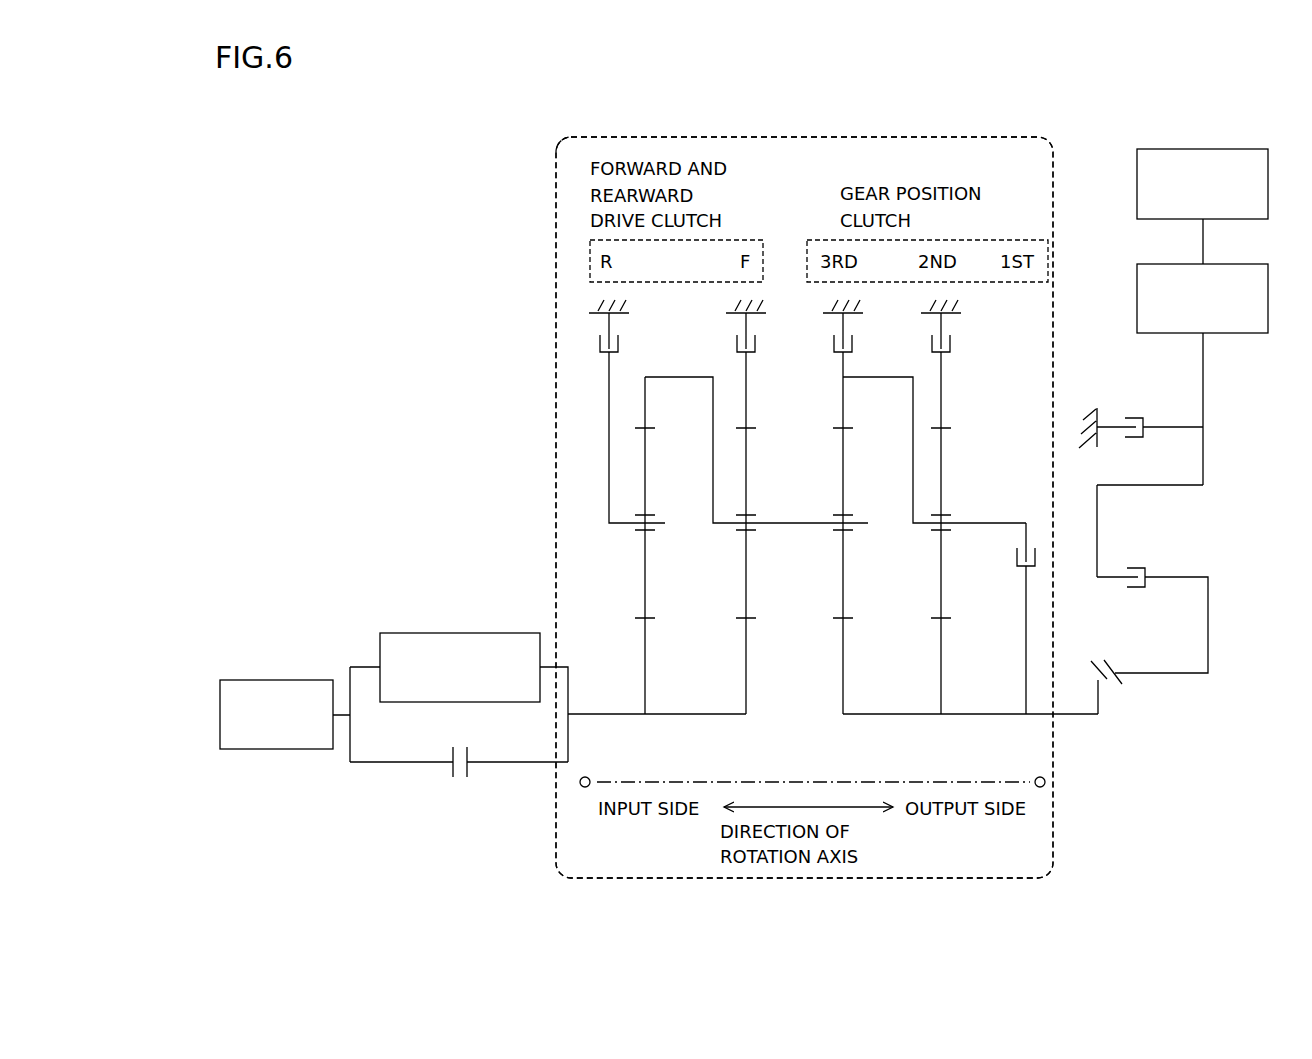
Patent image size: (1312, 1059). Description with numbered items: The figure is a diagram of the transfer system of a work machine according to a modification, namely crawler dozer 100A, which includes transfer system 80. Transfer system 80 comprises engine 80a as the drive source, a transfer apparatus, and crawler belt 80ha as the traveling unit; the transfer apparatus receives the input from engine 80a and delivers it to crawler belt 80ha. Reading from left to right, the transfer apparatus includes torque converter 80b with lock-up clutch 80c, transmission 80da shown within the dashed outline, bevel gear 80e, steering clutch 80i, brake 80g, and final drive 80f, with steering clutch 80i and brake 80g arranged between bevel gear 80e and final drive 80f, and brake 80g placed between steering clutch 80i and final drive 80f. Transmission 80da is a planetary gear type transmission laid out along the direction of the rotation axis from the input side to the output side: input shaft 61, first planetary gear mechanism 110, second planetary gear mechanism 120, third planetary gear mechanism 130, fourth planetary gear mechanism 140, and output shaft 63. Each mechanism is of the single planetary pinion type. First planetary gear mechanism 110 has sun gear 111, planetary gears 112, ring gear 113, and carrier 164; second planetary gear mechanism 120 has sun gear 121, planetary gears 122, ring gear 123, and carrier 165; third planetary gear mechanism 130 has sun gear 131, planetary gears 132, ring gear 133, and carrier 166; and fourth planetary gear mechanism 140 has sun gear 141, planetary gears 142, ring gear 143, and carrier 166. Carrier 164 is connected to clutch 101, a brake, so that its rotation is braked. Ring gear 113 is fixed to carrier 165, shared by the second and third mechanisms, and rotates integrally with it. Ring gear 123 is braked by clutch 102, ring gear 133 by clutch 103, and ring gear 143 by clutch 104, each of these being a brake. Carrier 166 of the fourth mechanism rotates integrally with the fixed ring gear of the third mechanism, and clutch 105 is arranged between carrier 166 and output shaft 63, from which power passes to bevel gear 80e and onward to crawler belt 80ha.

The crawler dozer 100A is at (1063, 100).
The transfer system 80 is at (869, 123).
The transmission 80da is at (1003, 135).
The engine 80a is at (272, 680).
The torque converter 80b is at (465, 633).
The lock-up clutch 80c is at (450, 779).
The bevel gear 80e is at (1112, 668).
The final drive 80f is at (1215, 264).
The brake 80g is at (1137, 440).
The crawler belt 80ha is at (1218, 149).
The steering clutch 80i is at (1137, 590).
The input shaft 61 is at (625, 718).
The output shaft 63 is at (1082, 718).
The clutch 101 is at (620, 345).
The clutch 102 is at (757, 345).
The clutch 103 is at (854, 345).
The clutch 104 is at (952, 345).
The clutch 105 is at (1015, 558).
The first planetary gear mechanism 110 is at (668, 545).
The sun gear 111 is at (647, 665).
The planetary gears 112 is at (647, 572).
The ring gear 113 is at (647, 397).
The second planetary gear mechanism 120 is at (770, 533).
The sun gear 121 is at (748, 665).
The planetary gears 122 is at (748, 572).
The ring gear 123 is at (748, 397).
The third planetary gear mechanism 130 is at (867, 533).
The sun gear 131 is at (845, 665).
The planetary gears 132 is at (845, 572).
The ring gear 133 is at (845, 397).
The fourth planetary gear mechanism 140 is at (966, 533).
The sun gear 141 is at (943, 665).
The planetary gears 142 is at (943, 597).
The ring gear 143 is at (943, 389).
The carrier 164 is at (616, 527).
The carrier 165 is at (800, 521).
The carrier 166 is at (1000, 521).